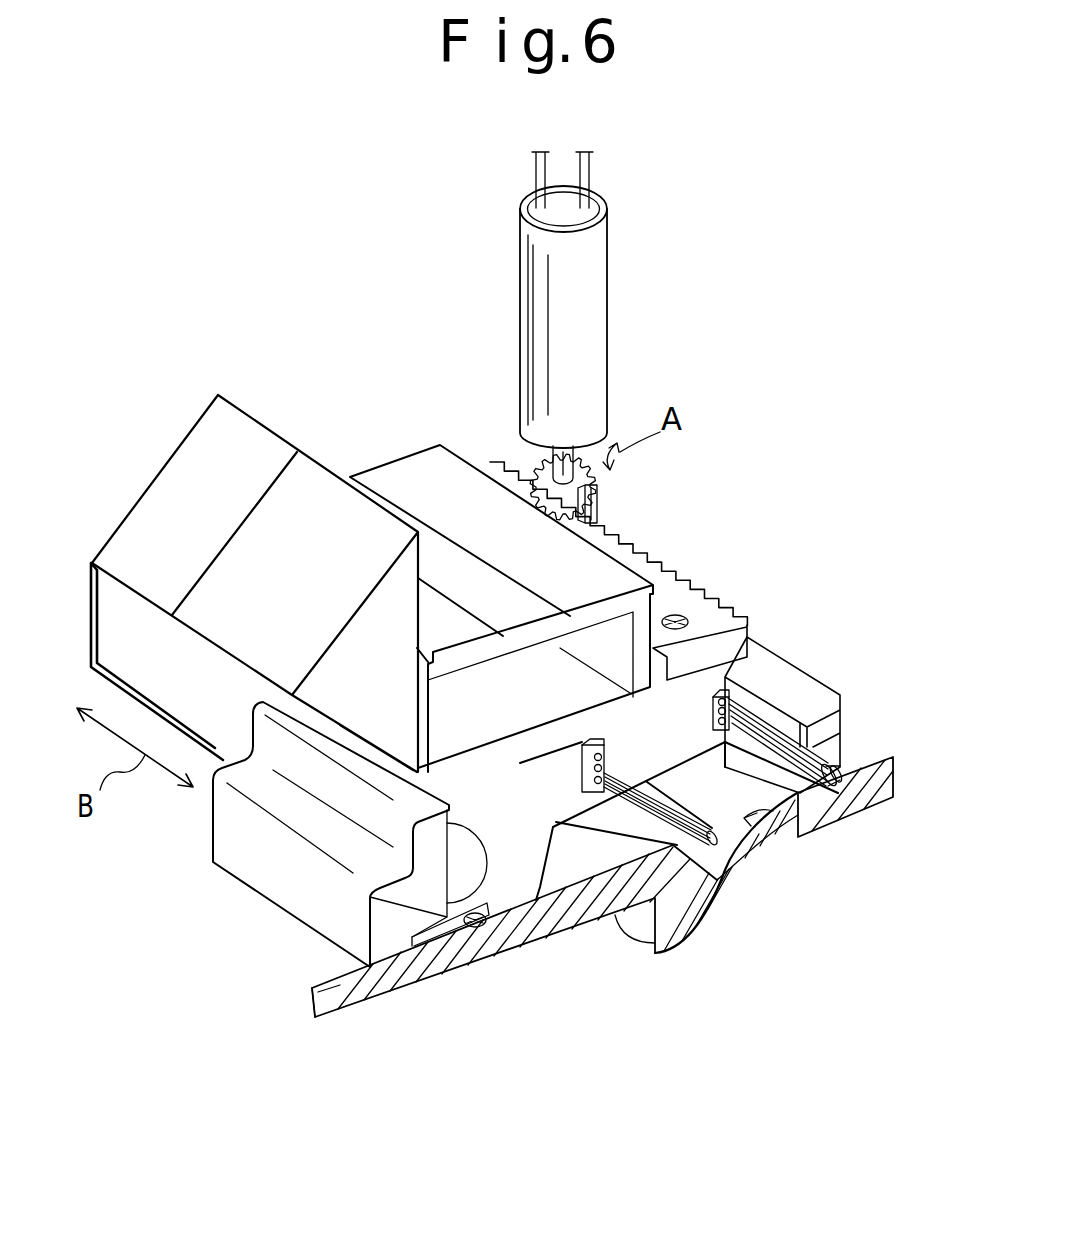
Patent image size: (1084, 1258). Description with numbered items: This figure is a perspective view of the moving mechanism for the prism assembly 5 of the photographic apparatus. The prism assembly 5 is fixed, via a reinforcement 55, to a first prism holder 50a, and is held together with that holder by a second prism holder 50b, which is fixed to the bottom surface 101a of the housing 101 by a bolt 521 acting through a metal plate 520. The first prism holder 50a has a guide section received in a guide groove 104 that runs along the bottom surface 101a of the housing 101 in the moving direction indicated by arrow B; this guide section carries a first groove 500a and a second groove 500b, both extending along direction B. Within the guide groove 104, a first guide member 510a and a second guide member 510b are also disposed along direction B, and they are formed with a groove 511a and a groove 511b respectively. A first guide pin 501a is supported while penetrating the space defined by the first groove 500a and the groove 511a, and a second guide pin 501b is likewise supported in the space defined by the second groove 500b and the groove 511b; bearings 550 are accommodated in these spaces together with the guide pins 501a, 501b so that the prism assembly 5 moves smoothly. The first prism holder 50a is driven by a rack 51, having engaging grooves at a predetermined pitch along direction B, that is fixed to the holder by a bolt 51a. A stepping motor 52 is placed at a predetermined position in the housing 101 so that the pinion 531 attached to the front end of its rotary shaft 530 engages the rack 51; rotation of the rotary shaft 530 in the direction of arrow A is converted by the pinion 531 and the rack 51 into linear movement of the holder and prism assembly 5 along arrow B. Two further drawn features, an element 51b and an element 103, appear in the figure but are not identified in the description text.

The prism assembly 5 is at (165, 535).
The first prism holder 50a is at (432, 478).
The second prism holder 50b is at (310, 898).
The rack 51 is at (716, 645).
The bolt 51a is at (682, 615).
The rack teeth 51b is at (662, 560).
The stepping motor 52 is at (590, 272).
The reinforcement 55 is at (432, 720).
The housing 101 is at (406, 985).
The bottom surface 101a is at (345, 1003).
The arcuate recess 103 is at (490, 900).
The guide groove 104 is at (787, 824).
The first groove 500a is at (592, 772).
The second groove 500b is at (745, 672).
The first guide pin 501a is at (735, 882).
The second guide pin 501b is at (836, 773).
The first guide member 510a is at (585, 772).
The second guide member 510b is at (812, 748).
The groove 511a is at (590, 785).
The groove 511b is at (727, 715).
The metal plate 520 is at (455, 958).
The bolt 521 is at (480, 928).
The rotary shaft 530 is at (548, 468).
The pinion 531 is at (600, 508).
The bearings 550 is at (758, 700).